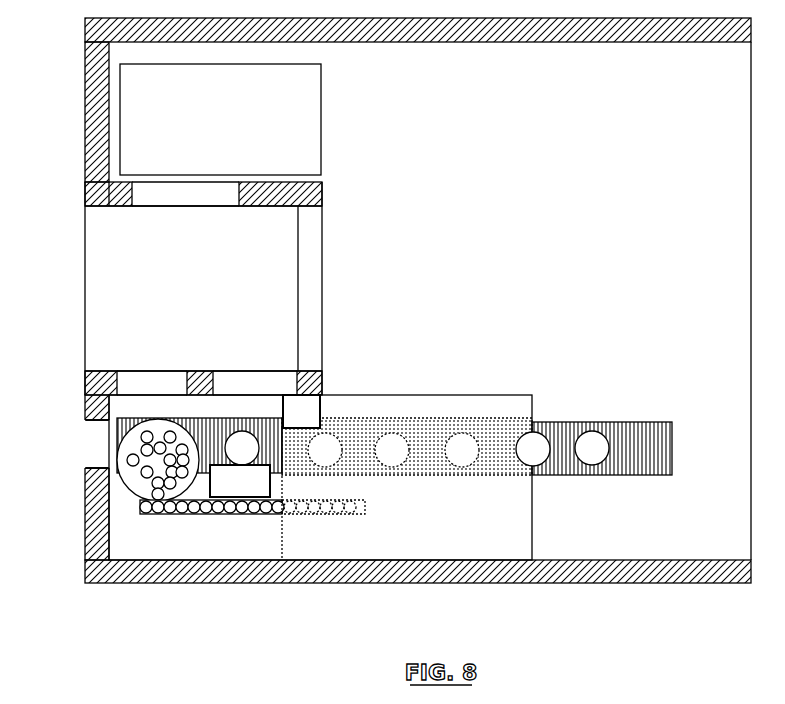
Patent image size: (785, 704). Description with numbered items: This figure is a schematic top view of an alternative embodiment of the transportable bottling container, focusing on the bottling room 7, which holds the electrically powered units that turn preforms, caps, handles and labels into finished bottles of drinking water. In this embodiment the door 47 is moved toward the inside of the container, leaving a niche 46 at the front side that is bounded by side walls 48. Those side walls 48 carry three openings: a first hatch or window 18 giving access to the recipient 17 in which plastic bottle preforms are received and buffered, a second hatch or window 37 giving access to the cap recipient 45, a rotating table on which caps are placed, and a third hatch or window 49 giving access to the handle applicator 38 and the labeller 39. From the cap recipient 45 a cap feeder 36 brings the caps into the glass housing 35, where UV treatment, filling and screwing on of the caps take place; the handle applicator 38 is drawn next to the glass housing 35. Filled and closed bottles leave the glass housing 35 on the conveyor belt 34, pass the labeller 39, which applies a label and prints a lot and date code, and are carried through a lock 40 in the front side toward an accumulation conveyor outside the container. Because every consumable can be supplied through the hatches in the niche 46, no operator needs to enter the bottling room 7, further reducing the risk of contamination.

The bottling room 7 is at (590, 237).
The recipient 17 is at (137, 98).
The first hatch 18 is at (215, 192).
The conveyor belt 34 is at (620, 468).
The glass housing 35 is at (407, 537).
The cap feeder 36 is at (225, 513).
The second hatch 37 is at (172, 371).
The handle applicator 38 is at (288, 423).
The labeller 39 is at (227, 493).
The lock 40 is at (95, 442).
The cap recipient 45 is at (133, 480).
The niche 46 is at (178, 280).
The door 47 is at (310, 253).
The side walls 48 is at (115, 188).
The third hatch 49 is at (263, 371).